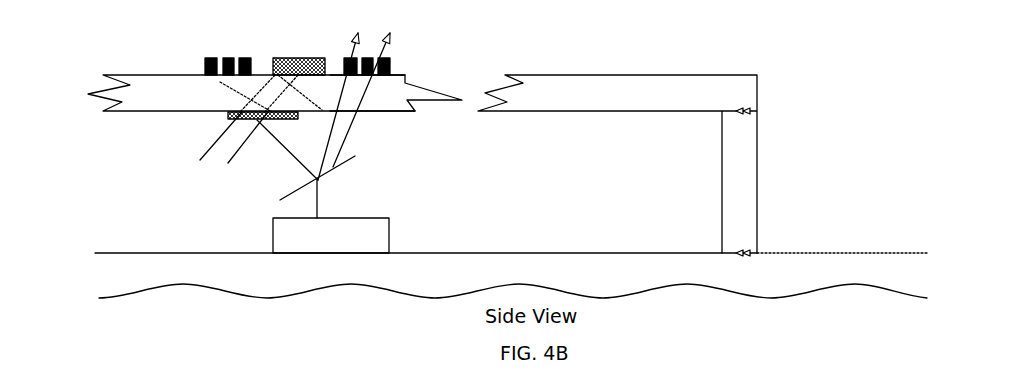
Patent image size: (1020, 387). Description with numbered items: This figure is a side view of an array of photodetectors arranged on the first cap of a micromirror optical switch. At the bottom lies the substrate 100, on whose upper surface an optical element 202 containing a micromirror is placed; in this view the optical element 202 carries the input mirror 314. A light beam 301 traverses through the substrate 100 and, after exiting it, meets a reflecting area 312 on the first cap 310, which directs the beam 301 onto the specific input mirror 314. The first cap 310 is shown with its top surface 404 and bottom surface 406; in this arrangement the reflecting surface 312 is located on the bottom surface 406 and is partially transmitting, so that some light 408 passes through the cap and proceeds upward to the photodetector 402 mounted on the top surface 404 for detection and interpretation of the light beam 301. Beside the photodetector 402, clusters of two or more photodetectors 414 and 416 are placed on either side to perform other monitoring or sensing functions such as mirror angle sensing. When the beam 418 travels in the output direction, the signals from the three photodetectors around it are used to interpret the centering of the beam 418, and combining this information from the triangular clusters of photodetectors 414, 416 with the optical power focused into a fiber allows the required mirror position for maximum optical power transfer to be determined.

The substrate 100 is at (118, 282).
The optical element 202 is at (273, 235).
The light beam 301 is at (280, 147).
The first cap 310 is at (760, 83).
The reflecting area 312 is at (227, 120).
The input mirror 314 is at (297, 182).
The photodetector 402 is at (268, 62).
The top surface 404 is at (408, 72).
The bottom surface 406 is at (383, 113).
The light 408 is at (88, 94).
The photodetectors 414 is at (220, 82).
The photodetectors 416 is at (372, 55).
The beam 418 is at (285, 92).